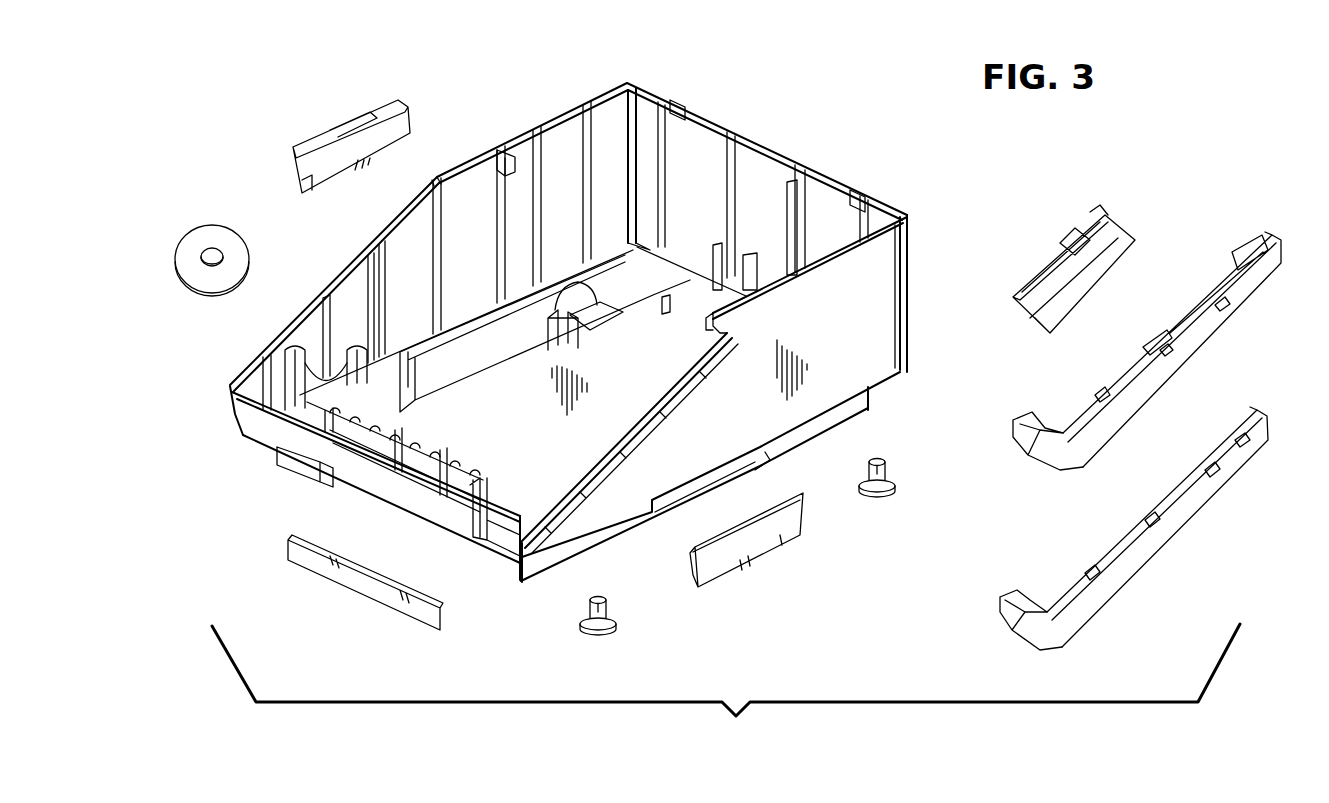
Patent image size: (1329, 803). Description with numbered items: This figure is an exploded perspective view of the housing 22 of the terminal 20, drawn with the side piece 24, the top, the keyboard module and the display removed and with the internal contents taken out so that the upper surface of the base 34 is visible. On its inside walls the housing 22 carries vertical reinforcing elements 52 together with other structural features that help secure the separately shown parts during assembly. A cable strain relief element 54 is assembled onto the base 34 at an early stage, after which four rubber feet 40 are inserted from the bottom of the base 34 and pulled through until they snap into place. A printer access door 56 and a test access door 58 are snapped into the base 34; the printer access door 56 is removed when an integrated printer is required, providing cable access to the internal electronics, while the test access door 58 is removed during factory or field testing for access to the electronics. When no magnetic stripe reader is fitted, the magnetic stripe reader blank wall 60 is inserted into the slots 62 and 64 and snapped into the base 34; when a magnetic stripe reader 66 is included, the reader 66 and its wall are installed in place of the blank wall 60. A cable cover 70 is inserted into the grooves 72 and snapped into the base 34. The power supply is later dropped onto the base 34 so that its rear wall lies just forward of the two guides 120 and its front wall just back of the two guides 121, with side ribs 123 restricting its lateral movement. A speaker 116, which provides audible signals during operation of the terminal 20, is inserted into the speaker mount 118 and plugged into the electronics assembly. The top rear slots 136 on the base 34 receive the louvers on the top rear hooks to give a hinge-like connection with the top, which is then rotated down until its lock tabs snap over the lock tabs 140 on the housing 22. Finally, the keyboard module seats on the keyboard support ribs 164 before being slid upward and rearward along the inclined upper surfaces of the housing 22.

The terminal 20 is at (568, 332).
The housing 22 is at (893, 326).
The side piece 24 is at (1190, 357).
The base 34 is at (568, 461).
The rubber feet 40 is at (890, 490).
The vertical reinforcing elements 52 is at (527, 127).
The cable strain relief element 54 is at (437, 433).
The printer access door 56 is at (310, 140).
The test access door 58 is at (760, 550).
The magnetic stripe reader blank wall 60 is at (1172, 530).
The slot 62 is at (727, 325).
The slot 64 is at (477, 530).
The magnetic stripe reader 66 is at (1097, 278).
The cable cover 70 is at (380, 603).
The grooves 72 is at (327, 480).
The speaker 116 is at (205, 225).
The speaker mount 118 is at (290, 363).
The guides 120 is at (667, 303).
The guides 121 is at (563, 343).
The side ribs 123 is at (573, 293).
The top rear slots 136 is at (853, 197).
The lock tabs 140 is at (505, 170).
The keyboard support ribs 164 is at (320, 300).